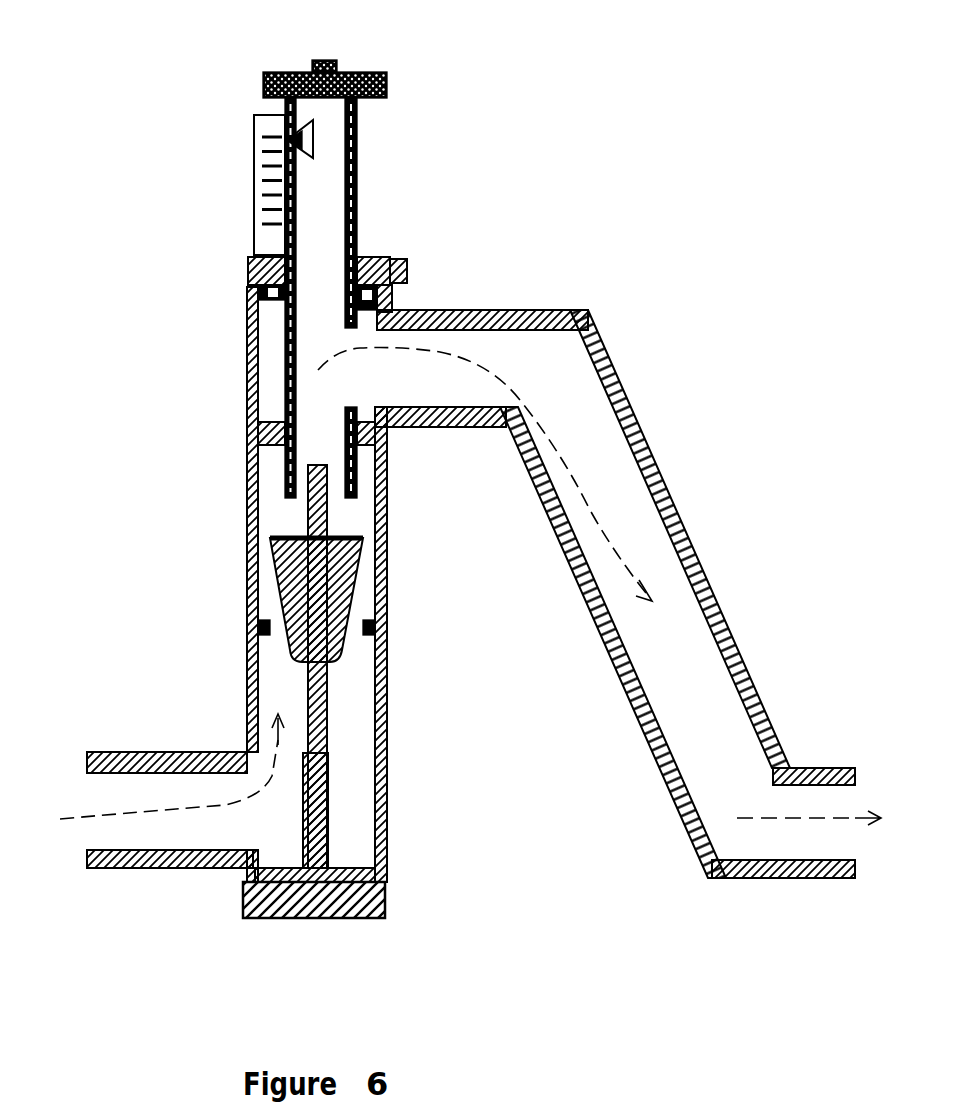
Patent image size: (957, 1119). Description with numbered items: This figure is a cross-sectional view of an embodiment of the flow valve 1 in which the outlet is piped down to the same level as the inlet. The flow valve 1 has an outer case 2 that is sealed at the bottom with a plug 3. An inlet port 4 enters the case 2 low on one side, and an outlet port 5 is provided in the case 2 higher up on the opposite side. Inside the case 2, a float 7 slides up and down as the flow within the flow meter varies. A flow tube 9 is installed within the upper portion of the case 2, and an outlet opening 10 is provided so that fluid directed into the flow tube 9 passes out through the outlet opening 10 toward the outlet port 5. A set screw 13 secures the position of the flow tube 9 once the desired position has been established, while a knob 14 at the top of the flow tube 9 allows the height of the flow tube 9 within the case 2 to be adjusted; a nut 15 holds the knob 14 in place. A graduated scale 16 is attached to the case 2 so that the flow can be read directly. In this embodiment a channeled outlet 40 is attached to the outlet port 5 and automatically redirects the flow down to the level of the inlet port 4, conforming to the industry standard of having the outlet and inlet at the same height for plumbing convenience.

The flow valve 1 is at (462, 472).
The outer case 2 is at (233, 461).
The plug 3 is at (386, 905).
The inlet port 4 is at (88, 792).
The outlet port 5 is at (830, 838).
The float 7 is at (350, 570).
The flow tube 9 is at (365, 158).
The outlet opening 10 is at (347, 364).
The set screw 13 is at (409, 271).
The knob 14 is at (388, 82).
The nut 15 is at (320, 56).
The graduated scale 16 is at (232, 154).
The channeled outlet 40 is at (690, 540).